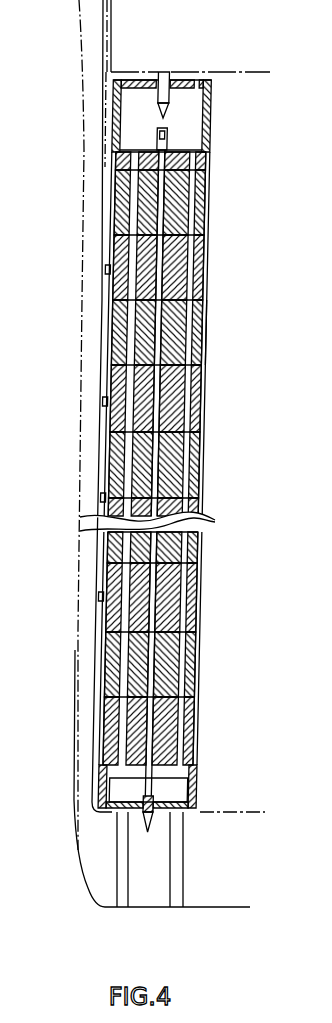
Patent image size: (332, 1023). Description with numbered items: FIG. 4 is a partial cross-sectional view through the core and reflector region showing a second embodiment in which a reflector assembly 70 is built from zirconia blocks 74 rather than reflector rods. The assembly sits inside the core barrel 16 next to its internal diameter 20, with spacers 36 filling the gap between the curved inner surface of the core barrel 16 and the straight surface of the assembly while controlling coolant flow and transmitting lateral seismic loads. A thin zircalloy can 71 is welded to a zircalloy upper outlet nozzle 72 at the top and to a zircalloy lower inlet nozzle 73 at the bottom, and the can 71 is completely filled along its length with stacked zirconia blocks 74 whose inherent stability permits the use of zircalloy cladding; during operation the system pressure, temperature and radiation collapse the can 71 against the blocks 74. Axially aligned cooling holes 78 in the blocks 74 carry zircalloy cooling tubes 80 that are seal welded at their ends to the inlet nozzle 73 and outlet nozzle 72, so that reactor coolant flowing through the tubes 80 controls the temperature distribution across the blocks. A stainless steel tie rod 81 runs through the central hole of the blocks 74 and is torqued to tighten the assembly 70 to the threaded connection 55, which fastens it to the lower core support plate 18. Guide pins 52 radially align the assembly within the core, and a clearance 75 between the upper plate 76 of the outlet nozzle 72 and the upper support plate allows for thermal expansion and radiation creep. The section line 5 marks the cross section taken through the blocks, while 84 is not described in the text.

The core barrel 16 is at (82, 192).
The lower core support plate 18 is at (202, 897).
The internal diameter of the core barrel 20 is at (104, 233).
The spacers 36 is at (103, 594).
The guide pins 52 is at (173, 72).
The threaded connection 55 is at (153, 817).
The reflector assembly 70 is at (215, 262).
The zircalloy can 71 is at (207, 332).
The upper outlet nozzle 72 is at (212, 132).
The lower inlet nozzle 73 is at (202, 786).
The zirconia blocks 74 is at (203, 201).
The clearance 75 is at (203, 77).
The upper plate of the outlet nozzle 76 is at (125, 78).
The cooling holes 78 is at (125, 383).
The zircalloy cooling tubes 80 is at (120, 458).
The stainless steel tie rod 81 is at (182, 670).
The central rod connector 84 is at (158, 133).
The section line 5- 5 is at (77, 280).